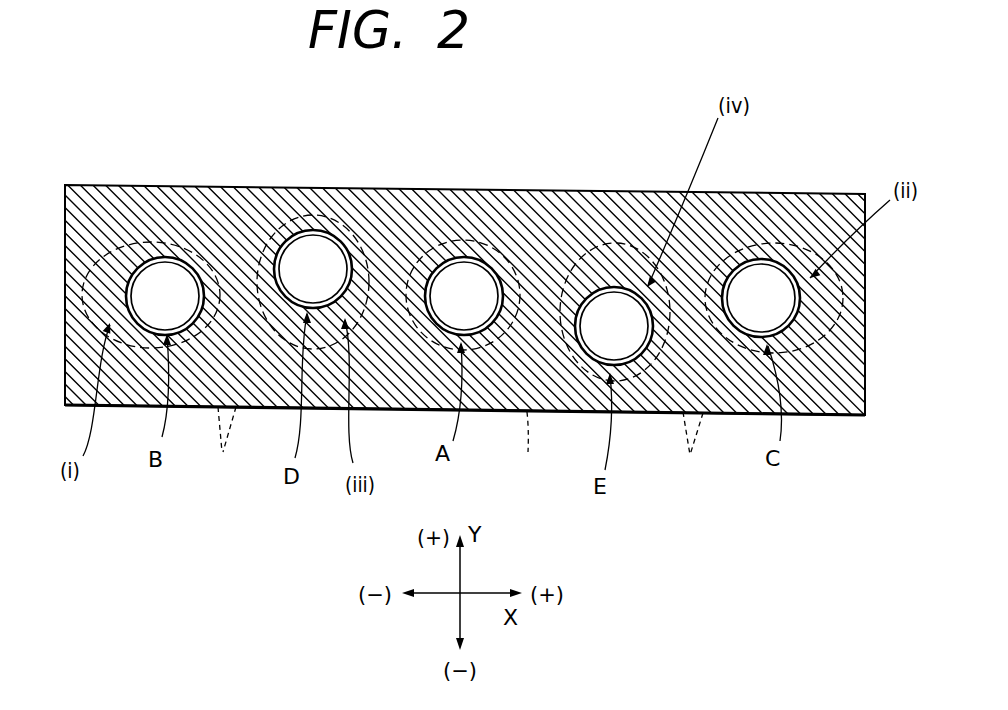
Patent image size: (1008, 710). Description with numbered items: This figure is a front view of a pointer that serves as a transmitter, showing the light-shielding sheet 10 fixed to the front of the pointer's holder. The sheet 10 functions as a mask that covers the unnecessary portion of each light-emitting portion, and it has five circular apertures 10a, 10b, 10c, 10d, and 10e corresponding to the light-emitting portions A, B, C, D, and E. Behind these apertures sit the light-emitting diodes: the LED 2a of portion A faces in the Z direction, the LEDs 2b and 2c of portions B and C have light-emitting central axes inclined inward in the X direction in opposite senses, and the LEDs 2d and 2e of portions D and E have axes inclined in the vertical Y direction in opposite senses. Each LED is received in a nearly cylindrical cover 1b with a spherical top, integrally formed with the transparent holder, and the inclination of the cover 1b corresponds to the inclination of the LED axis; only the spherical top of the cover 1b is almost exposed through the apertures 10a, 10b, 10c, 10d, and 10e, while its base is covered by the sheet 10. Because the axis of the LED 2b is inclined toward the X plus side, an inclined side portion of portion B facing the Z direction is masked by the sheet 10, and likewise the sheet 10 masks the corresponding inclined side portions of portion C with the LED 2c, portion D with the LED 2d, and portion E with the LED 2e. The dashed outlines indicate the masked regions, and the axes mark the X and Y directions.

The light-shielding sheet 10 is at (831, 403).
The light-emitting diode 2a is at (460, 275).
The light-emitting diode 2b is at (164, 270).
The light-emitting diode 2c is at (755, 278).
The light-emitting diode 2d is at (308, 243).
The light-emitting diode 2e is at (605, 308).
The aperture 10a is at (488, 262).
The aperture 10b is at (193, 260).
The aperture 10c is at (787, 260).
The aperture 10d is at (338, 234).
The aperture 10e is at (632, 290).
The cover 1b is at (456, 449).